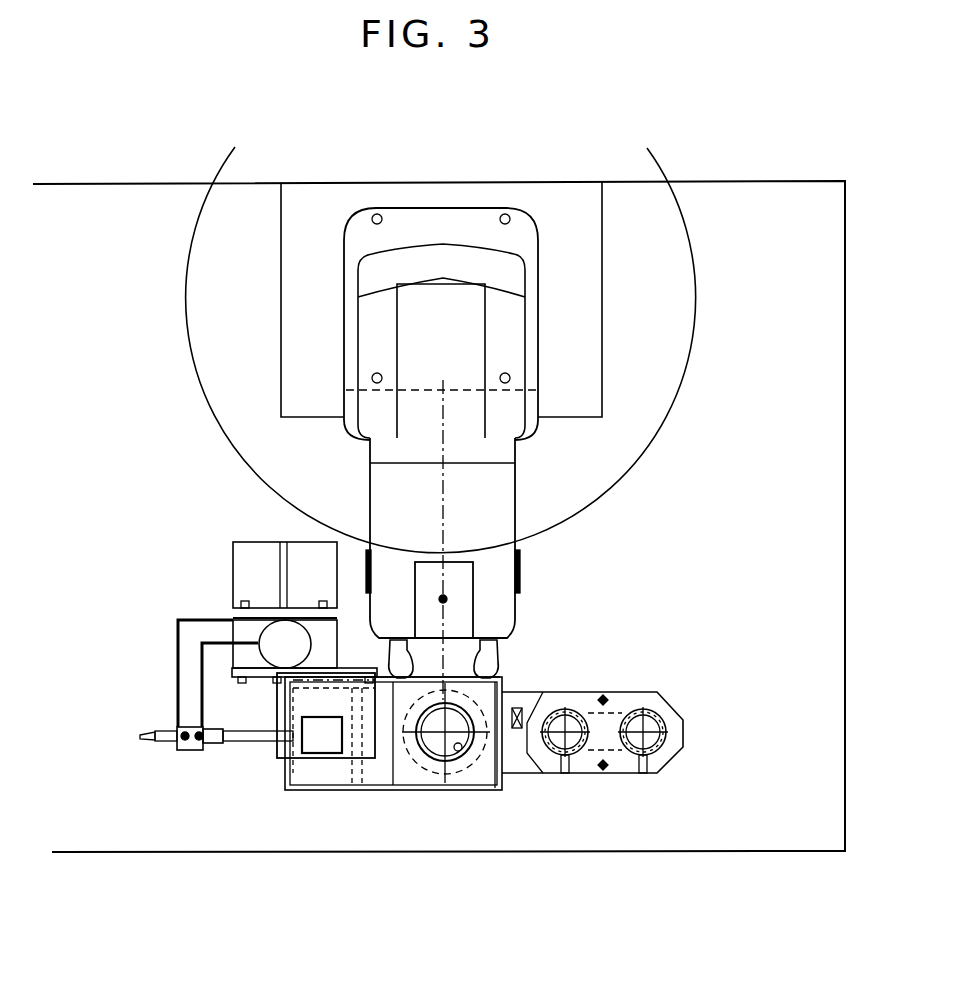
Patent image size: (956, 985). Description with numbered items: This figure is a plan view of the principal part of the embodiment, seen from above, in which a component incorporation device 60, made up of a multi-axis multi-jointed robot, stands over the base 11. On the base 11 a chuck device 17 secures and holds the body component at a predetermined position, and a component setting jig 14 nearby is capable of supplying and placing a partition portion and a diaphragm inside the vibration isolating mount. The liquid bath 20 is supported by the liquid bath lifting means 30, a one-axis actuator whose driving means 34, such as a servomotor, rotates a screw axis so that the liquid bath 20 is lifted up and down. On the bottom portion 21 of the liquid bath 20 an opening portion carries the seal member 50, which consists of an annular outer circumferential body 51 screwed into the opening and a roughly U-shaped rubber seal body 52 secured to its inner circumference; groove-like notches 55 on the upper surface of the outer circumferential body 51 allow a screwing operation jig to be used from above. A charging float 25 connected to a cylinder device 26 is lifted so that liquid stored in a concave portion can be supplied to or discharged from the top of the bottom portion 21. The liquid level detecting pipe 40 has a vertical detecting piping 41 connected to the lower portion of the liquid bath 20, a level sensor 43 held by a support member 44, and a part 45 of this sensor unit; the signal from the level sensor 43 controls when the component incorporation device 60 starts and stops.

The base 11 is at (765, 830).
The component setting jig 14 is at (617, 772).
The chuck device 17 is at (502, 650).
The liquid bath 20 is at (483, 802).
The bottom portion 21 is at (400, 790).
The charging float 25 is at (333, 772).
The cylinder device 26 is at (318, 740).
The liquid bath lifting means 30 is at (240, 597).
The driving means 34 is at (282, 632).
The liquid level detecting pipe 40 is at (173, 760).
The detecting piping 41 is at (212, 748).
The level sensor 43 is at (167, 743).
The support member 44 is at (185, 658).
The sensor body 45 is at (195, 750).
The seal member 50 is at (488, 794).
The outer circumferential body 51 is at (482, 707).
The seal body 52 is at (458, 750).
The groove-like notches 55 is at (495, 788).
The component incorporation device 60 is at (525, 498).